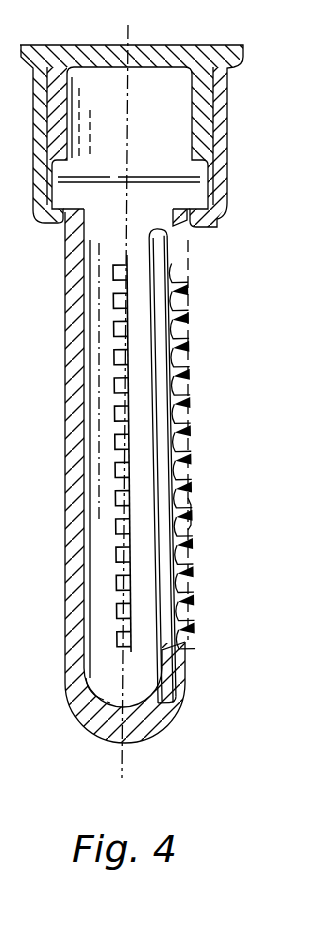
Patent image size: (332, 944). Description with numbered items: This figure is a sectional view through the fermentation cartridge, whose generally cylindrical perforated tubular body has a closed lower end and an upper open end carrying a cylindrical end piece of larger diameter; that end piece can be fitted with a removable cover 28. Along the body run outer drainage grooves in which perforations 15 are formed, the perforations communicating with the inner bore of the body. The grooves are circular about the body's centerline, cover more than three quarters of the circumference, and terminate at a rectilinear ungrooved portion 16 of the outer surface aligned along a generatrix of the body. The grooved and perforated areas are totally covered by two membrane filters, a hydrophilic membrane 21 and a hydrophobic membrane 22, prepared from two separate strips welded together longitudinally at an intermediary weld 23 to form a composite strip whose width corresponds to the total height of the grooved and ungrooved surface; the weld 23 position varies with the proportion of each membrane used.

The removable cover 28 is at (163, 57).
The rectilinear ungrooved portion 16 is at (68, 507).
The perforations 15 is at (173, 299).
The hydrophilic membrane 21 is at (190, 409).
The intermediary weld 23 is at (190, 519).
The hydrophobic membrane 22 is at (188, 636).